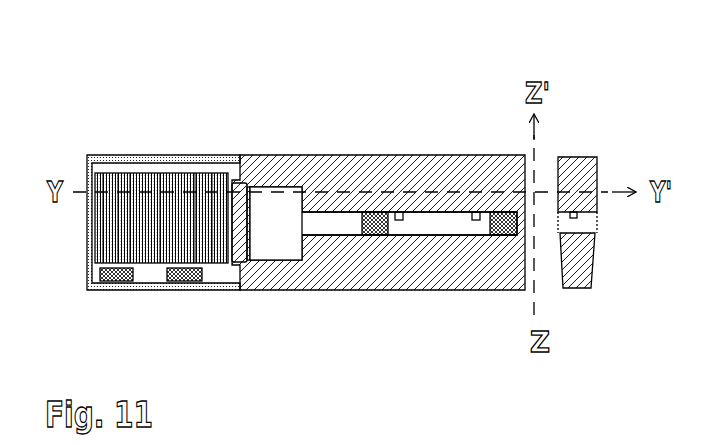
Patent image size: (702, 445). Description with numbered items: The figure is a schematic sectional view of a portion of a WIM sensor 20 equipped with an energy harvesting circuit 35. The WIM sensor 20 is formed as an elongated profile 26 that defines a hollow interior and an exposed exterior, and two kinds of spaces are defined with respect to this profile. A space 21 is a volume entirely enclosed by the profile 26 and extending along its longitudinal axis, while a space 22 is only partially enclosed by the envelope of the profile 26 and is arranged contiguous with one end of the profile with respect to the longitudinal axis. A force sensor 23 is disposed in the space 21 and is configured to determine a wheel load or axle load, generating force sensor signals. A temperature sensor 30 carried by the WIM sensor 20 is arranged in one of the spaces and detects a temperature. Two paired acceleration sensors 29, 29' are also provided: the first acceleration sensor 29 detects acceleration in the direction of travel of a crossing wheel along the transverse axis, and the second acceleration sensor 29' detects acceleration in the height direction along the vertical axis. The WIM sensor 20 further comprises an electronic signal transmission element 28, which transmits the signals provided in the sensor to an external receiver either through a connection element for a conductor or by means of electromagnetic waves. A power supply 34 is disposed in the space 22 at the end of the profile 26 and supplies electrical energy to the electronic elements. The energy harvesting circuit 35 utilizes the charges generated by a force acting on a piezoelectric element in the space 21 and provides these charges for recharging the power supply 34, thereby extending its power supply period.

The WIM sensor 20 is at (100, 111).
The space 21 is at (420, 232).
The space 22 is at (223, 272).
The force sensor 23 is at (379, 212).
The profile 26 is at (333, 272).
The electronic signal transmission element 28 is at (114, 283).
The first acceleration sensor 29 is at (410, 123).
The second acceleration sensor 29' is at (582, 157).
The temperature sensor 30 is at (477, 212).
The power supply 34 is at (172, 173).
The energy harvesting circuit 35 is at (186, 283).